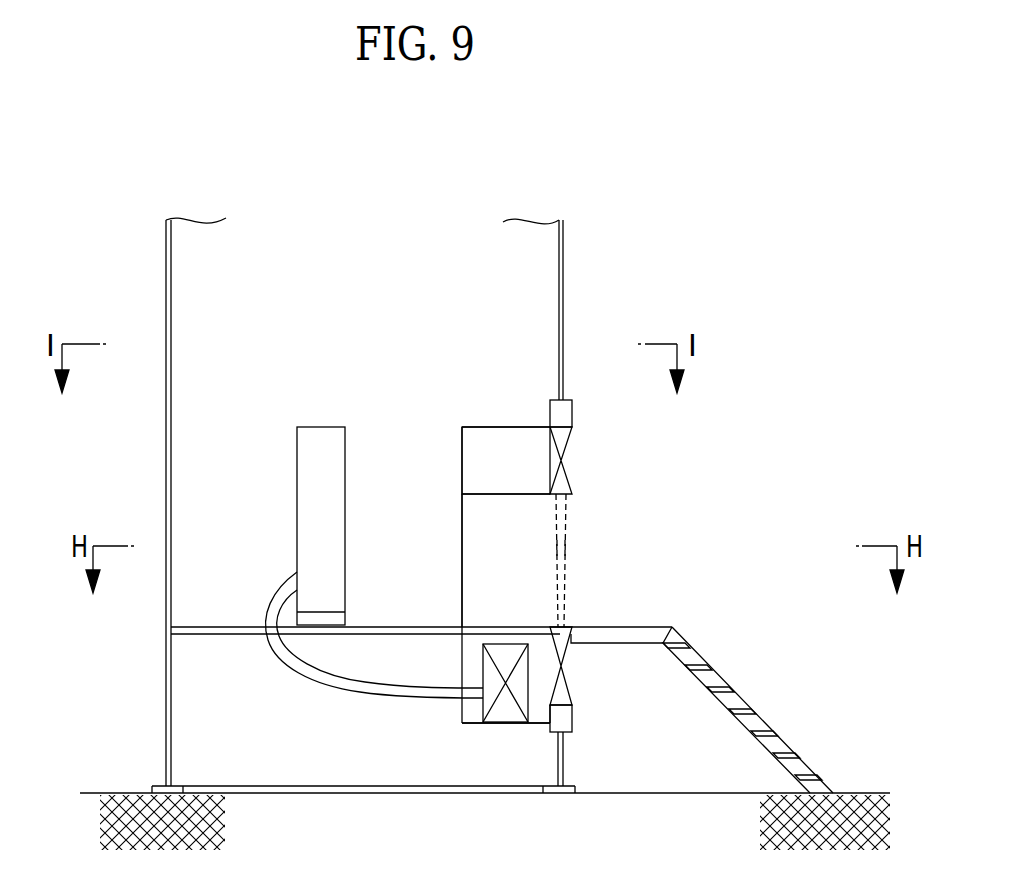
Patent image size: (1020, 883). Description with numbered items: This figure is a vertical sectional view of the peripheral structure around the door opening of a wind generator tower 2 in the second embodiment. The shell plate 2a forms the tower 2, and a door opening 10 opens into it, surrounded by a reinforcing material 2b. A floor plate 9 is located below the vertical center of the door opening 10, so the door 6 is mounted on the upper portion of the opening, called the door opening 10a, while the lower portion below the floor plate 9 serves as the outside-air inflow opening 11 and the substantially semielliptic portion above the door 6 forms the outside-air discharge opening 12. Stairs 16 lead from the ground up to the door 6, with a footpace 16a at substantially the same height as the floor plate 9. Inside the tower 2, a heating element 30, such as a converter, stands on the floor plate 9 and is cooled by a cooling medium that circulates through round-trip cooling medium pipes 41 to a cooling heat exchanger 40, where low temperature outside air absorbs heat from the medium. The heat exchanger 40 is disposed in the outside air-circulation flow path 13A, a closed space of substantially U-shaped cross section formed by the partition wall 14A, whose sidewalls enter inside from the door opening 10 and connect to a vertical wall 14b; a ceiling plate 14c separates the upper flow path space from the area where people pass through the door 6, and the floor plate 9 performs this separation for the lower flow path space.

The tower 2 is at (570, 229).
The shell plate 2a is at (563, 275).
The reinforcing material 2b is at (572, 418).
The door 6 is at (568, 525).
The floor plate 9 is at (218, 627).
The door opening 10 is at (619, 660).
The door opening (upper portion) 10a is at (568, 552).
The outside-air inflow opening 11 is at (566, 666).
The outside-air discharge opening 12 is at (566, 450).
The outside air-circulation flow path 13A is at (461, 407).
The partition wall 14A is at (461, 533).
The vertical wall 14b is at (462, 560).
The ceiling plate 14c is at (508, 494).
The stairs 16 is at (702, 681).
The footpace 16a is at (660, 627).
The heating element 30 is at (322, 427).
The cooling heat exchanger 40 is at (480, 712).
The cooling medium pipes 41 is at (313, 680).